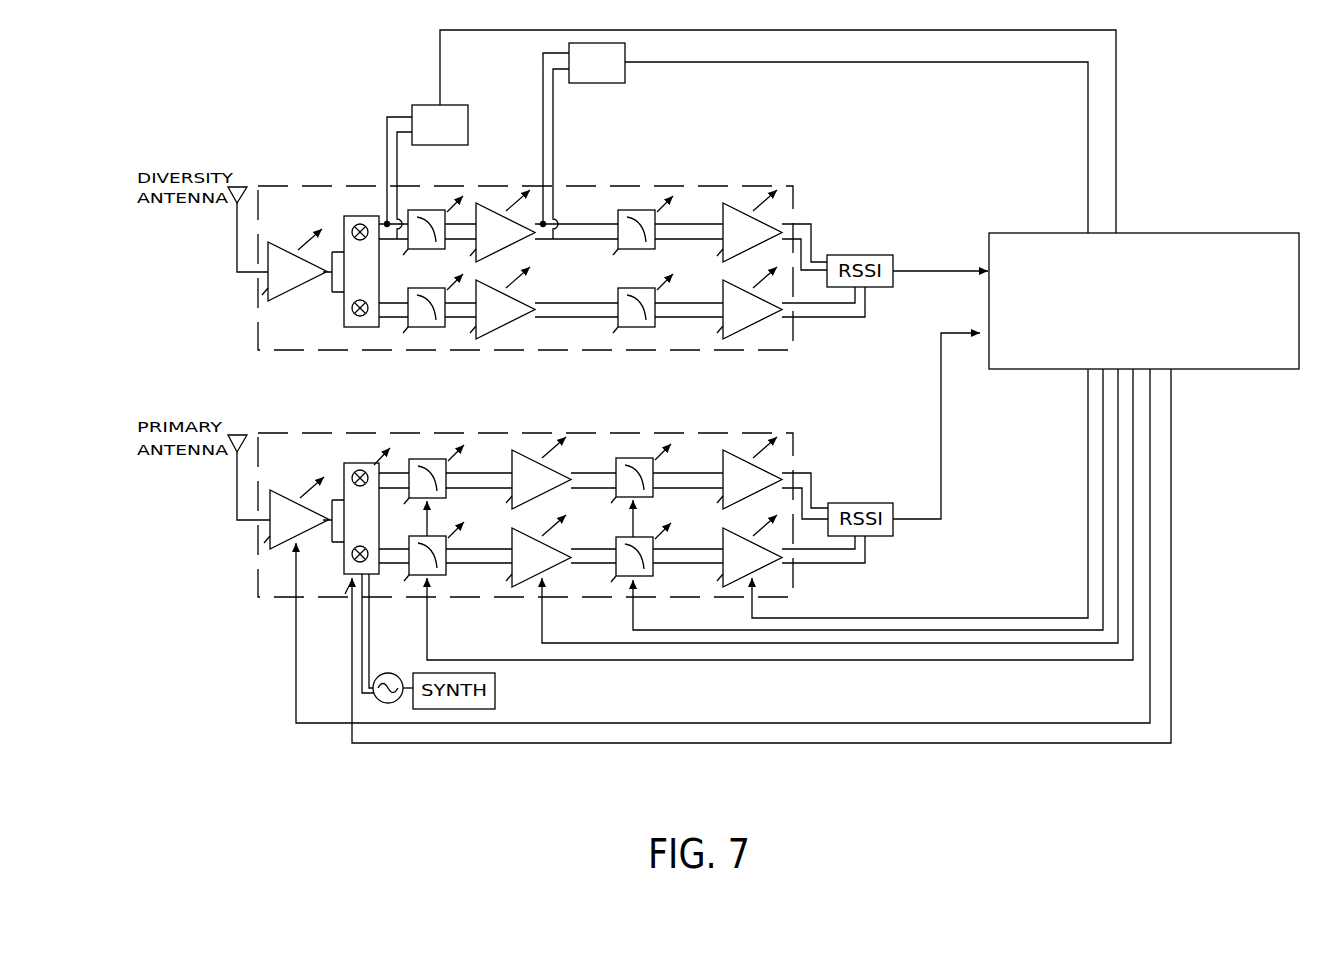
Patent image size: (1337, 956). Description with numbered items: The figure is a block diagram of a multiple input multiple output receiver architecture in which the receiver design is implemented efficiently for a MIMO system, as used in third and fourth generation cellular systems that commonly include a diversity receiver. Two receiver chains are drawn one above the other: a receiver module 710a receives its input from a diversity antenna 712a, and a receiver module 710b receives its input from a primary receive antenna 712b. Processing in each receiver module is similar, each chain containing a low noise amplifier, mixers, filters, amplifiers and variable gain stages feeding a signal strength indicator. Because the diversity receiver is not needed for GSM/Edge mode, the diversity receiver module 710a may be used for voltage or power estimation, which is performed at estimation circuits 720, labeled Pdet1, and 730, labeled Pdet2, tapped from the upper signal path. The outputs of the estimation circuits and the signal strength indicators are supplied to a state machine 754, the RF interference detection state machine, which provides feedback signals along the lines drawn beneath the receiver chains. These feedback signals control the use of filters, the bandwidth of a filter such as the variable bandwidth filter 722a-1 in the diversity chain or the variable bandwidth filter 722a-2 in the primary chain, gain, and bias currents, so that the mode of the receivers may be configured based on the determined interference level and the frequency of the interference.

The diversity antenna 712a is at (243, 187).
The primary receive antenna 712b is at (243, 435).
The receiver module 710a is at (283, 184).
The receiver module 710b is at (283, 433).
The estimation circuit 720 is at (473, 105).
The estimation circuit 730 is at (597, 83).
The variable bandwidth filter 722a-1 is at (423, 210).
The variable bandwidth filter 722a-2 is at (422, 459).
The state machine 754 is at (1222, 233).